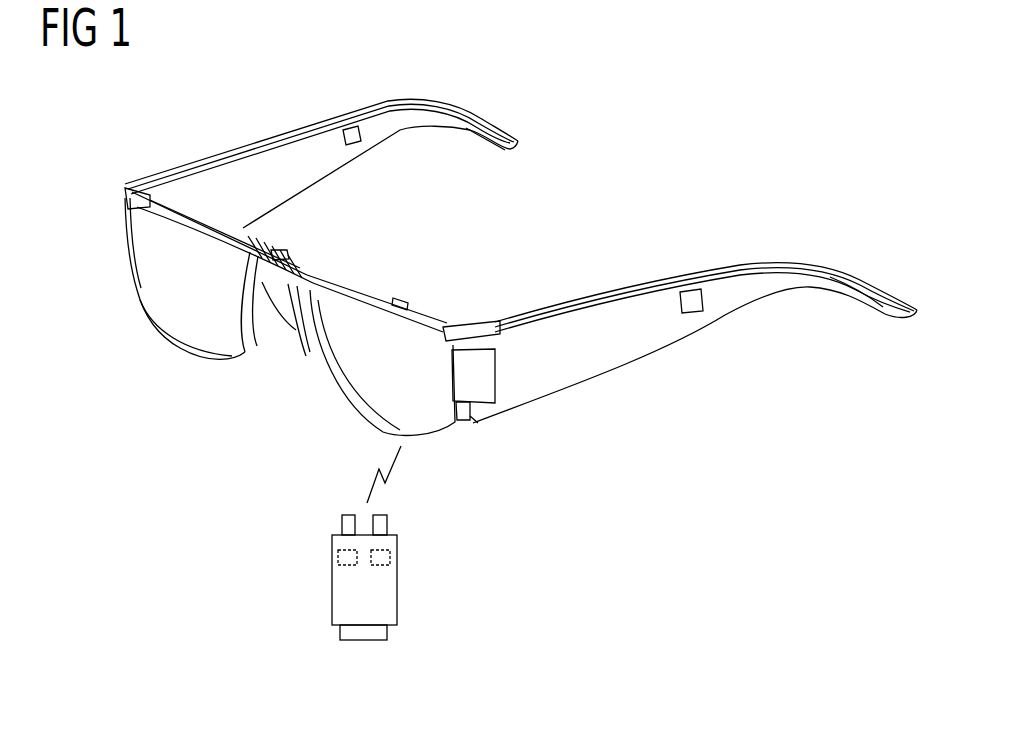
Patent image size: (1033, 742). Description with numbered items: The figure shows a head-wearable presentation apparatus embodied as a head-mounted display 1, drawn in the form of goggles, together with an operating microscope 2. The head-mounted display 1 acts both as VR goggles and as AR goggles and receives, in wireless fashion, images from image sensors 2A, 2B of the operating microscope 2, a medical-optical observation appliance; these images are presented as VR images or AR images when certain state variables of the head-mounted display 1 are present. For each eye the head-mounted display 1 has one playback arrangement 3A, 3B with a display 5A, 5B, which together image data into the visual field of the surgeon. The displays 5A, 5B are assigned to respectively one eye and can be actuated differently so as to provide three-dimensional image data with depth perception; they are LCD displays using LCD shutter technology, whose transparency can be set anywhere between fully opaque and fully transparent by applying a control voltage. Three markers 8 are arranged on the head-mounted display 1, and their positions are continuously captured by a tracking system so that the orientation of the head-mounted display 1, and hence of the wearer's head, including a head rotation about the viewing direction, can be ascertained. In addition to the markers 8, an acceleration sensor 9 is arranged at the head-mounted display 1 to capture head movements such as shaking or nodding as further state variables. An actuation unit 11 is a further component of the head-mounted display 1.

The head-mounted display 1 is at (566, 110).
The operating microscope 2 is at (365, 577).
The image sensor 2A is at (340, 555).
The image sensor 2B is at (390, 555).
The playback arrangement 3A is at (162, 335).
The playback arrangement 3B is at (334, 381).
The display 5A is at (155, 288).
The display 5B is at (369, 413).
The marker 8 is at (349, 128).
The acceleration sensor 9 is at (265, 160).
The actuation unit 11 is at (560, 312).